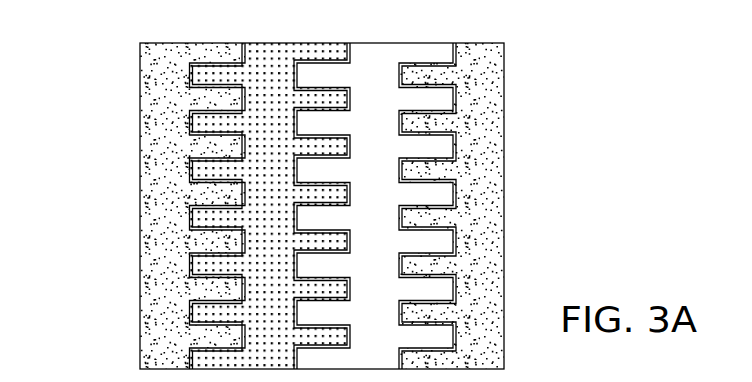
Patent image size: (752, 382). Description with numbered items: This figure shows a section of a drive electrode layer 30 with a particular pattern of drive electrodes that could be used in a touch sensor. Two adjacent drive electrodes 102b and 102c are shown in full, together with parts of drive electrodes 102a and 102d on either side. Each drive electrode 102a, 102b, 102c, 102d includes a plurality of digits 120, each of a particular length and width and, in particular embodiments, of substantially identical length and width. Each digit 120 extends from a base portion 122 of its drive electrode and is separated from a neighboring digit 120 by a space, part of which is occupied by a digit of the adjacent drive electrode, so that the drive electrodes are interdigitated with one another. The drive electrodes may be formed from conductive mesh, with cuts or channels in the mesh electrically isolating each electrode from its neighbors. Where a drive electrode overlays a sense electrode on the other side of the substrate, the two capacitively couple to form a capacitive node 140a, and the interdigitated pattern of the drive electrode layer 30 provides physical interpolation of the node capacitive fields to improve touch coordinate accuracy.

The drive electrode layer 30 is at (348, 194).
The drive electrode 102a is at (165, 87).
The drive electrode 102b is at (270, 150).
The drive electrode 102c is at (377, 208).
The drive electrode 102d is at (475, 295).
The digit 120 is at (453, 98).
The base portion 122 is at (373, 148).
The capacitive node 140a is at (455, 43).